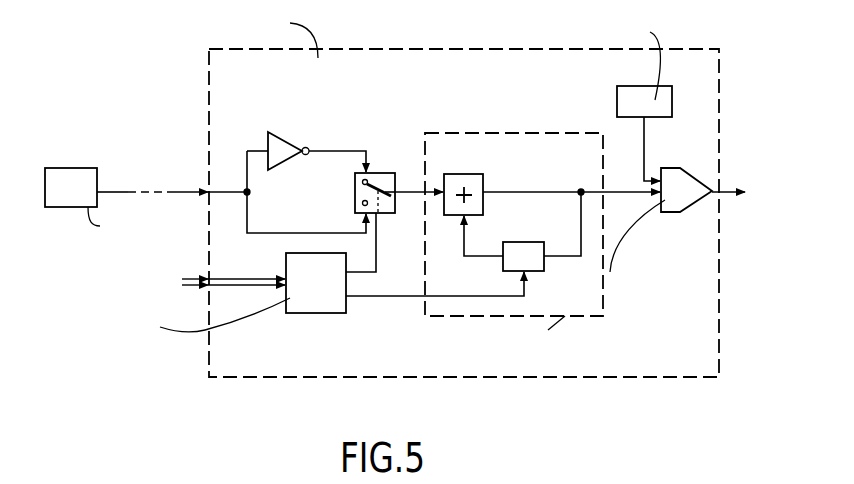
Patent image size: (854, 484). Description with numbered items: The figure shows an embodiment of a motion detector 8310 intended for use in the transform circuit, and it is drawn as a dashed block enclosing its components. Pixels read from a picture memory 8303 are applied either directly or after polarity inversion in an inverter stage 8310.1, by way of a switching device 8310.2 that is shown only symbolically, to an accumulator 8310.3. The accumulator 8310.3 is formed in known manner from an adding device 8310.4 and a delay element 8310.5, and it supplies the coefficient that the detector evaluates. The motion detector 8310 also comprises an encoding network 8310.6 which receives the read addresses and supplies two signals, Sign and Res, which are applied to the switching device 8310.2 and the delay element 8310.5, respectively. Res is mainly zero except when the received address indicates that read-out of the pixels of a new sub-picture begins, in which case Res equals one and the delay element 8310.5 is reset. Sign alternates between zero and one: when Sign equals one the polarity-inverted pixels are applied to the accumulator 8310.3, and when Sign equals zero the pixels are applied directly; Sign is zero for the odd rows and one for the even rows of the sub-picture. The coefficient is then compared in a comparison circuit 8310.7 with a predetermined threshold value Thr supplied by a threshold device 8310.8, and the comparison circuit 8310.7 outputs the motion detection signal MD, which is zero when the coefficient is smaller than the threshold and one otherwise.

The picture memory 8303 is at (70, 168).
The motion detector 8310 is at (656, 378).
The inverter stage 8310.1 is at (282, 133).
The switching device 8310.2 is at (386, 172).
The accumulator 8310.3 is at (485, 133).
The adding device 8310.4 is at (463, 168).
The delay element 8310.5 is at (520, 232).
The encoding network 8310.6 is at (316, 313).
The comparison circuit 8310.7 is at (668, 207).
The threshold device 8310.8 is at (617, 100).